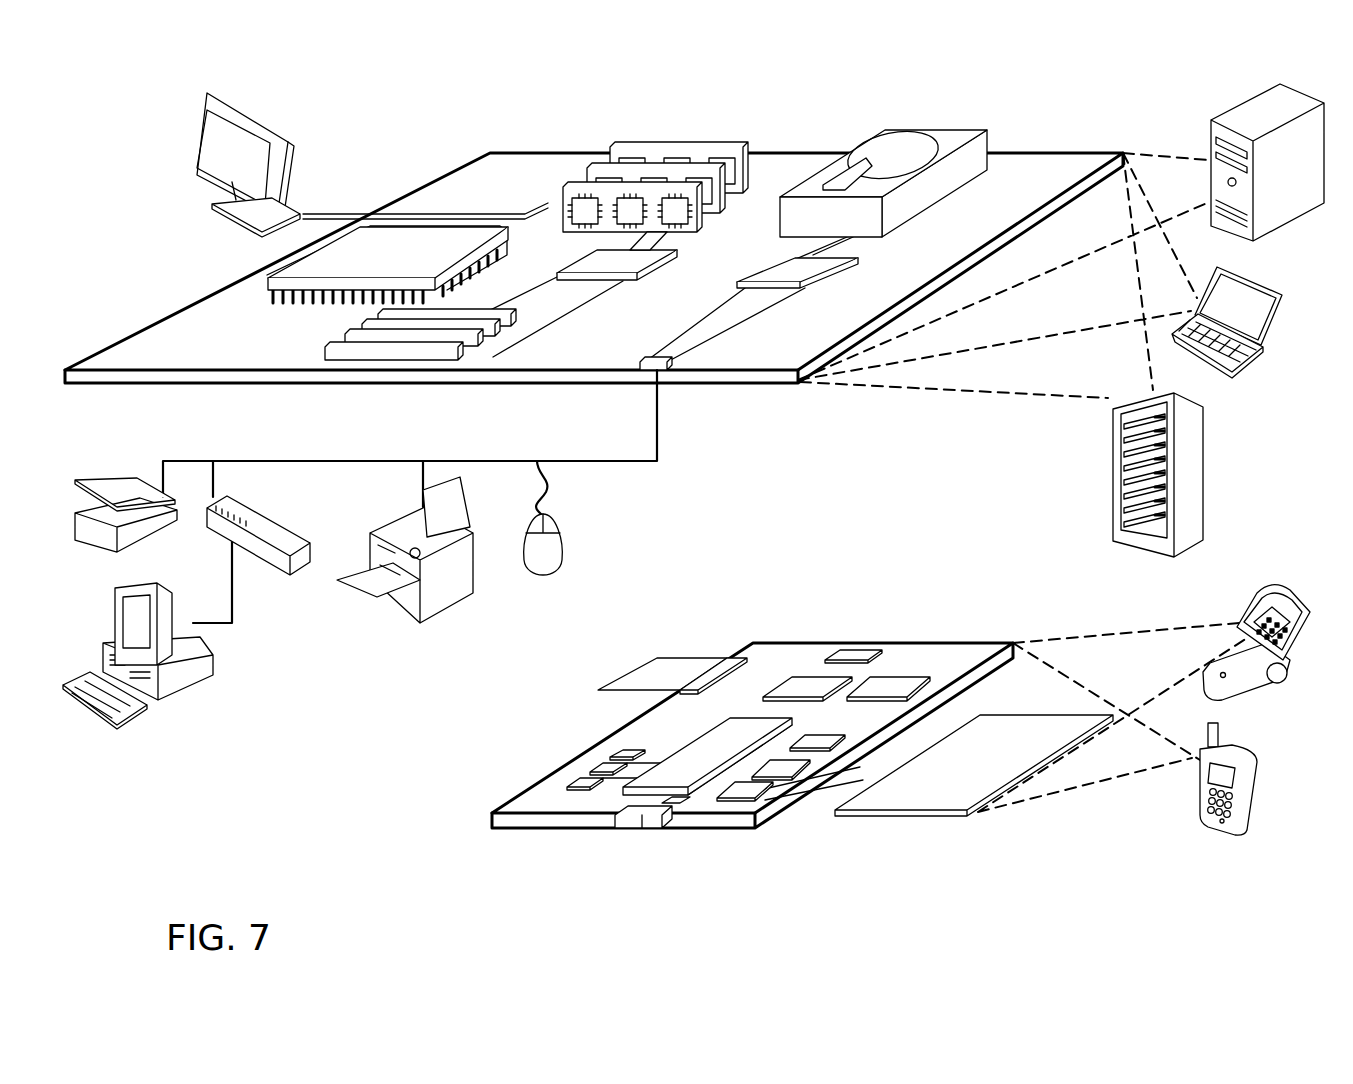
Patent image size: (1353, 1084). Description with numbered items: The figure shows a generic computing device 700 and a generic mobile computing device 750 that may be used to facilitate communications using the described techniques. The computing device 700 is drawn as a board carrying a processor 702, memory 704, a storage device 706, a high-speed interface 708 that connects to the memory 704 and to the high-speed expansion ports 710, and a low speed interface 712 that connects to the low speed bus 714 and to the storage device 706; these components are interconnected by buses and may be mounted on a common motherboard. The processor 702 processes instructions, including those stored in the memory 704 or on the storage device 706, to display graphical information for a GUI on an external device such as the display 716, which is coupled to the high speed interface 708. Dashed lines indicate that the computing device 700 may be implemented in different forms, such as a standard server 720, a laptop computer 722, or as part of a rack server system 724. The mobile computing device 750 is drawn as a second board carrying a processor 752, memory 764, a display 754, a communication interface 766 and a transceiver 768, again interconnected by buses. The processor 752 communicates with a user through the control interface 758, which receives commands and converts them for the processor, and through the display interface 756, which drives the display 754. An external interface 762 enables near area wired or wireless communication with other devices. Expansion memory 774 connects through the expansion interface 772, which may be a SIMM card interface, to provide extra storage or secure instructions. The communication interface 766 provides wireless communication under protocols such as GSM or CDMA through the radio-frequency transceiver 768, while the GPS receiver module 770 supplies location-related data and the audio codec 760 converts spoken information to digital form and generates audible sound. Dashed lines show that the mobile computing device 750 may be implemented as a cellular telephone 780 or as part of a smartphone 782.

The computing device 700 is at (408, 126).
The processor 702 is at (280, 280).
The memory 704 is at (630, 145).
The storage device 706 is at (880, 133).
The high-speed interface 708 is at (597, 262).
The high-speed expansion ports 710 is at (347, 338).
The low speed interface 712 is at (775, 268).
The low speed bus 714 is at (668, 374).
The display 716 is at (203, 97).
The standard server 720 is at (1211, 141).
The laptop computer 722 is at (1270, 296).
The rack server system 724 is at (1113, 499).
The mobile computing device 750 is at (469, 822).
The processor 752 is at (678, 780).
The display 754 is at (930, 800).
The display interface 756 is at (753, 787).
The control interface 758 is at (815, 743).
The audio codec 760 is at (840, 740).
The external interface 762 is at (642, 817).
The memory 764 is at (590, 772).
The communication interface 766 is at (808, 684).
The transceiver 768 is at (893, 680).
The GPS receiver module 770 is at (860, 650).
The expansion interface 772 is at (733, 660).
The expansion memory 774 is at (660, 658).
The cellular telephone 780 is at (1262, 603).
The smartphone 782 is at (1198, 783).